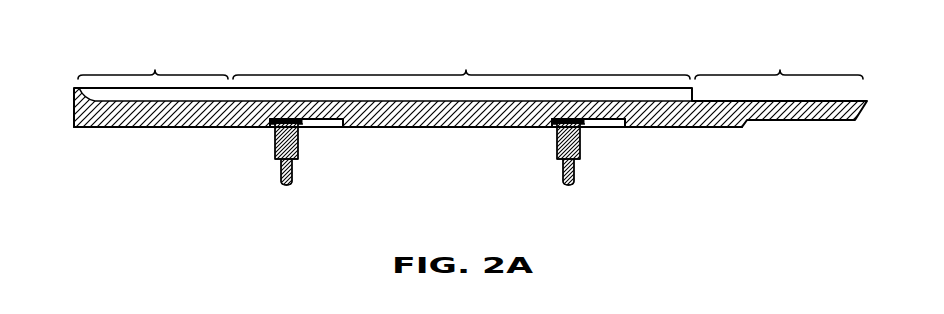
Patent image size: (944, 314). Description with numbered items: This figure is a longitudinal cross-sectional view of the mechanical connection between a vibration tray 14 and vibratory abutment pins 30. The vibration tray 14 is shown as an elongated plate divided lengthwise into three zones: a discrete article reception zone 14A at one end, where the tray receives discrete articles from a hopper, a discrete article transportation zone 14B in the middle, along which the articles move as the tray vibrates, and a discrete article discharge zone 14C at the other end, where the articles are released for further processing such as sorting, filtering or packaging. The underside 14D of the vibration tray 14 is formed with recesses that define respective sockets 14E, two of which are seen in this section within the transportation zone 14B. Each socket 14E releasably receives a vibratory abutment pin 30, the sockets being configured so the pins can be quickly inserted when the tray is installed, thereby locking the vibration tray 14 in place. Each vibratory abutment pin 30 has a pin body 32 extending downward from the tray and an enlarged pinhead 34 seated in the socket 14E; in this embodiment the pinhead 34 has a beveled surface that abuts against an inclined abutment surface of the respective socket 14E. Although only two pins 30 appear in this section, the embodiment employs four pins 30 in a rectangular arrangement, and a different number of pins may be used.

The vibration tray 14 is at (87, 115).
The discrete article reception zone 14A is at (153, 61).
The discrete article transportation zone 14B is at (461, 61).
The discrete article discharge zone 14C is at (779, 61).
The underside 14D is at (153, 128).
The socket 14E is at (328, 122).
The vibratory abutment pin 30 is at (278, 157).
The pin body 32 is at (293, 163).
The pinhead 34 is at (278, 133).